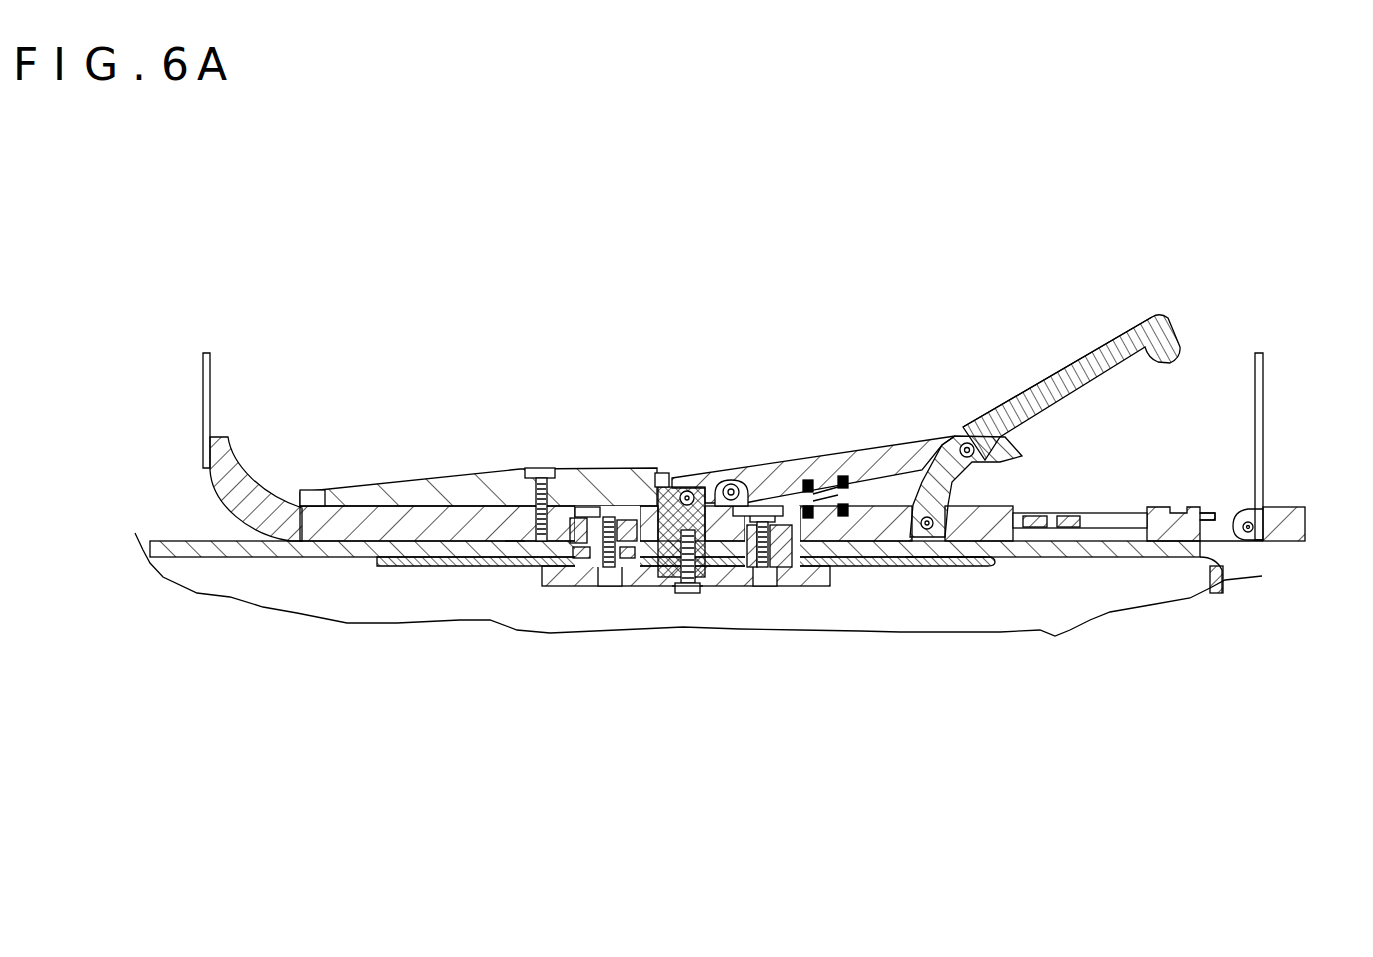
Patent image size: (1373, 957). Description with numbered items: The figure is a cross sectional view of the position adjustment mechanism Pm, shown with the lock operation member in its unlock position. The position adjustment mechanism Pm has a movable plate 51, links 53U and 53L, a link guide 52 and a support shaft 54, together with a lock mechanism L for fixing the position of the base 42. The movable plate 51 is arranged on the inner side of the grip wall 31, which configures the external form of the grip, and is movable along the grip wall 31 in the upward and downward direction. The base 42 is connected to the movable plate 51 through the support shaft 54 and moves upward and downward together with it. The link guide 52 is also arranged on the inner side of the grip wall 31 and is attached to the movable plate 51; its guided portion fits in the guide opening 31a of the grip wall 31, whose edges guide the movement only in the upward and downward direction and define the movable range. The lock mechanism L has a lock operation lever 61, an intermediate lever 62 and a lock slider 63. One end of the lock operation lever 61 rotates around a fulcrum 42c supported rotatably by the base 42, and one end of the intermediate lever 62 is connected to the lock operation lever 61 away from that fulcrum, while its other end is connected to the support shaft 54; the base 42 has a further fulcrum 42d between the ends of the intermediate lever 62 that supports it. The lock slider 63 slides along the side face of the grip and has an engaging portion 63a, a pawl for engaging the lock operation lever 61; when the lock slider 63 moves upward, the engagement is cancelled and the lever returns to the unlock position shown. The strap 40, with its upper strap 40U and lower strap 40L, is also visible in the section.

The grip wall 31 is at (287, 543).
The guide opening 31a is at (515, 547).
The strap 40 is at (226, 410).
The upper strap 40U is at (212, 372).
The lower strap 40L is at (1264, 415).
The base 42 is at (395, 530).
The fulcrum 42c is at (935, 562).
The fulcrum 42d is at (731, 482).
The movable plate 51 is at (830, 567).
The link guide 52 is at (887, 565).
The link 53U is at (593, 535).
The link 53L is at (775, 567).
The support shaft 54 is at (661, 476).
The lock operation lever 61 is at (1040, 393).
The intermediate lever 62 is at (823, 460).
The lock slider 63 is at (1157, 513).
The engaging portion 63a is at (1210, 513).
The lock mechanism L is at (968, 416).
The position adjustment mechanism Pm is at (652, 592).